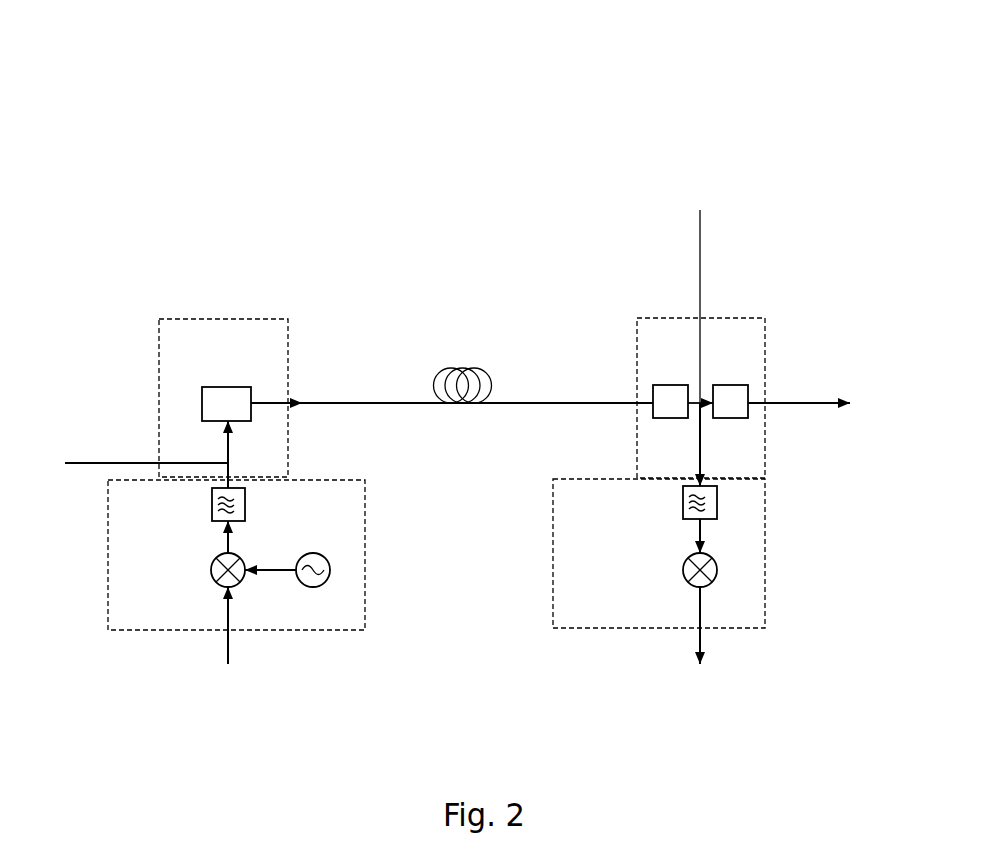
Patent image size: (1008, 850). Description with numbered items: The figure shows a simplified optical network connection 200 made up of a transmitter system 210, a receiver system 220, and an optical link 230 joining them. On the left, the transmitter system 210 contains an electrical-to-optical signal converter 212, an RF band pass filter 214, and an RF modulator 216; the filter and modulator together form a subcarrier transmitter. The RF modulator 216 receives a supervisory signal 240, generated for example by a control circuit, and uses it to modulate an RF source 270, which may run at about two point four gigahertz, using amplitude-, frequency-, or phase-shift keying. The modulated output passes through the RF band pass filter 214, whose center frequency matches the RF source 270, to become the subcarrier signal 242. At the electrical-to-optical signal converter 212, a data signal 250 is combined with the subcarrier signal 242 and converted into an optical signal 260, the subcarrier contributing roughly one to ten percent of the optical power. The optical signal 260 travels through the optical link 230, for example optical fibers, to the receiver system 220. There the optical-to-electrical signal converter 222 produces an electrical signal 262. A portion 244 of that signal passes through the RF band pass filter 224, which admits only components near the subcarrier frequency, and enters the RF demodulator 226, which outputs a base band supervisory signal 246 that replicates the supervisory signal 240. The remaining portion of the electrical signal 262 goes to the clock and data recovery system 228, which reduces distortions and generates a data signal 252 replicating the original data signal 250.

The optical connection 200 is at (107, 132).
The transmitter system 210 is at (243, 317).
The electrical-to-optical signal converter 212 is at (220, 390).
The RF band pass filter 214 is at (210, 509).
The RF modulator 216 is at (210, 570).
The receiver system 220 is at (743, 317).
The optical-to-electrical signal converter 222 is at (675, 383).
The RF band pass filter 224 is at (680, 508).
The RF demodulator 226 is at (681, 570).
The clock and data recovery system 228 is at (733, 383).
The optical link 230 is at (493, 382).
The supervisory signal 240 is at (228, 648).
The subcarrier signal 242 is at (228, 470).
The portion of the signal 244 is at (700, 445).
The supervisory signal 246 is at (700, 647).
The data signal 250 is at (80, 463).
The data signal 252 is at (810, 403).
The optical signal 260 is at (345, 403).
The electrical signal 262 is at (701, 324).
The RF source 270 is at (368, 557).